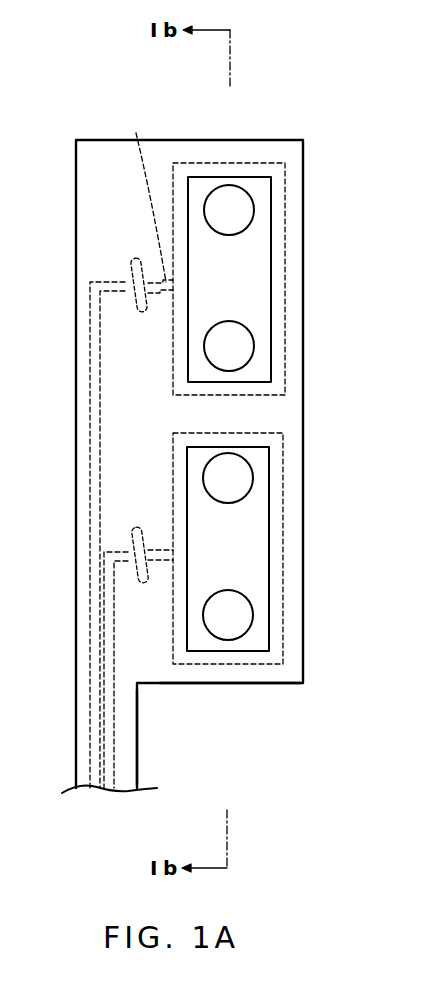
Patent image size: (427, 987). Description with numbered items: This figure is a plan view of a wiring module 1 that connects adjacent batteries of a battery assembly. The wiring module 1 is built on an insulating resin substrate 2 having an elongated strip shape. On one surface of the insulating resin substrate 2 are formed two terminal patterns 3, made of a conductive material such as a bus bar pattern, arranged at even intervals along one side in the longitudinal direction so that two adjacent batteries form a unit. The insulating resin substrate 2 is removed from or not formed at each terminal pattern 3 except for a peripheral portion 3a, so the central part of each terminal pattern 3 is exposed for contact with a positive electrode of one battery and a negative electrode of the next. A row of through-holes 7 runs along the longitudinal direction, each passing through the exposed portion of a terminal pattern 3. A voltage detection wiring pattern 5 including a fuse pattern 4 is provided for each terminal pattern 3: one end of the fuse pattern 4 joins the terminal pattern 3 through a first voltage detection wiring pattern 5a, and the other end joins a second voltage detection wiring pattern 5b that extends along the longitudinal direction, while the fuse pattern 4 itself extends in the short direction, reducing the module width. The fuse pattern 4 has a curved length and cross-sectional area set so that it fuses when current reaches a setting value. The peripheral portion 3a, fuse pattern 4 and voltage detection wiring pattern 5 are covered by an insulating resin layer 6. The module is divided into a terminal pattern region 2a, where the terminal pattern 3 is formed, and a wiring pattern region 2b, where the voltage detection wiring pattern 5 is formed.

The wiring module 1 is at (283, 121).
The insulating resin substrate 2 is at (305, 143).
The terminal pattern region 2a is at (237, 684).
The wiring pattern region 2b is at (138, 741).
The terminal pattern 3 is at (262, 279).
The peripheral portion 3a is at (278, 303).
The fuse pattern 4 is at (127, 270).
The voltage detection wiring pattern 5 is at (93, 448).
The first voltage detection wiring pattern 5a is at (149, 334).
The second voltage detection wiring pattern 5b is at (90, 445).
The insulating resin layer 6 is at (107, 163).
The through-hole 7 is at (254, 212).